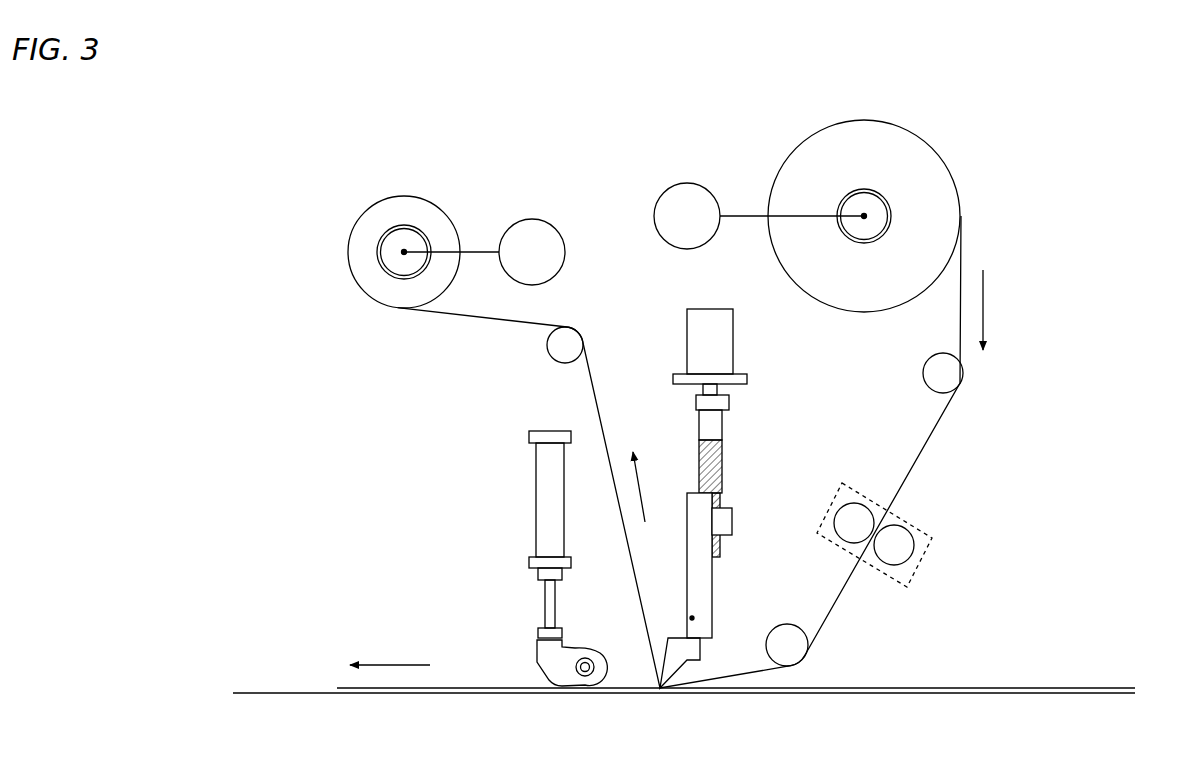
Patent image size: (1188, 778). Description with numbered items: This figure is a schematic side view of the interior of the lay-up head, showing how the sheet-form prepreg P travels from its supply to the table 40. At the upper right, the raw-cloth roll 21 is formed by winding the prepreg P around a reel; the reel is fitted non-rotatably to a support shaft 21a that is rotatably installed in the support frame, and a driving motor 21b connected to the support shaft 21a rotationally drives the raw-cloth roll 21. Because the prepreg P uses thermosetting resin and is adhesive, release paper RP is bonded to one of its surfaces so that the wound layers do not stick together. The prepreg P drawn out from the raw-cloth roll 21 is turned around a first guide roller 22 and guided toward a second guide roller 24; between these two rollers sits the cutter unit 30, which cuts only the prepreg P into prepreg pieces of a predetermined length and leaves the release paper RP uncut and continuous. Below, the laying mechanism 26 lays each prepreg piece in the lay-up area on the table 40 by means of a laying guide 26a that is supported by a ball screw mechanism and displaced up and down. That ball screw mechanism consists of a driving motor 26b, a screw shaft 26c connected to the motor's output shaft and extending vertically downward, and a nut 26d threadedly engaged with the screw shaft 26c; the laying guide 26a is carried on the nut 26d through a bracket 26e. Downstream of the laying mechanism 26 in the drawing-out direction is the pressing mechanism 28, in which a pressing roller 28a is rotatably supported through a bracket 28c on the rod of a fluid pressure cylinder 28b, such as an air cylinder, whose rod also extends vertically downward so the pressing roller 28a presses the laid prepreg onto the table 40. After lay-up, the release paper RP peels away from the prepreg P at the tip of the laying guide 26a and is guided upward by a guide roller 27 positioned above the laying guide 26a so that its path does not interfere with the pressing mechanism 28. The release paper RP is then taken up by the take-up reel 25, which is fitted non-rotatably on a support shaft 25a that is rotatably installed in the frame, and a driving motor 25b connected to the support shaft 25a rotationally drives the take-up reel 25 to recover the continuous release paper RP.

The raw-cloth roll 21 is at (907, 158).
The support shaft 21a is at (873, 217).
The driving motor 21b is at (687, 192).
The first guide roller 22 is at (950, 380).
The second guide roller 24 is at (792, 648).
The take-up reel 25 is at (432, 220).
The support shaft 25a is at (380, 273).
The driving motor 25b is at (542, 230).
The laying mechanism 26 is at (753, 427).
The laying guide 26a is at (680, 650).
The driving motor 26b is at (717, 348).
The screw shaft 26c is at (700, 457).
The nut 26d is at (720, 522).
The bracket 26e is at (698, 587).
The guide roller 27 is at (563, 347).
The pressing mechanism 28 is at (507, 442).
The pressing roller 28a is at (600, 667).
The fluid pressure cylinder 28b is at (547, 500).
The bracket 28c is at (540, 673).
The cutter unit 30 is at (932, 560).
The table 40 is at (1122, 690).
The prepreg P is at (475, 685).
The release paper RP is at (592, 380).